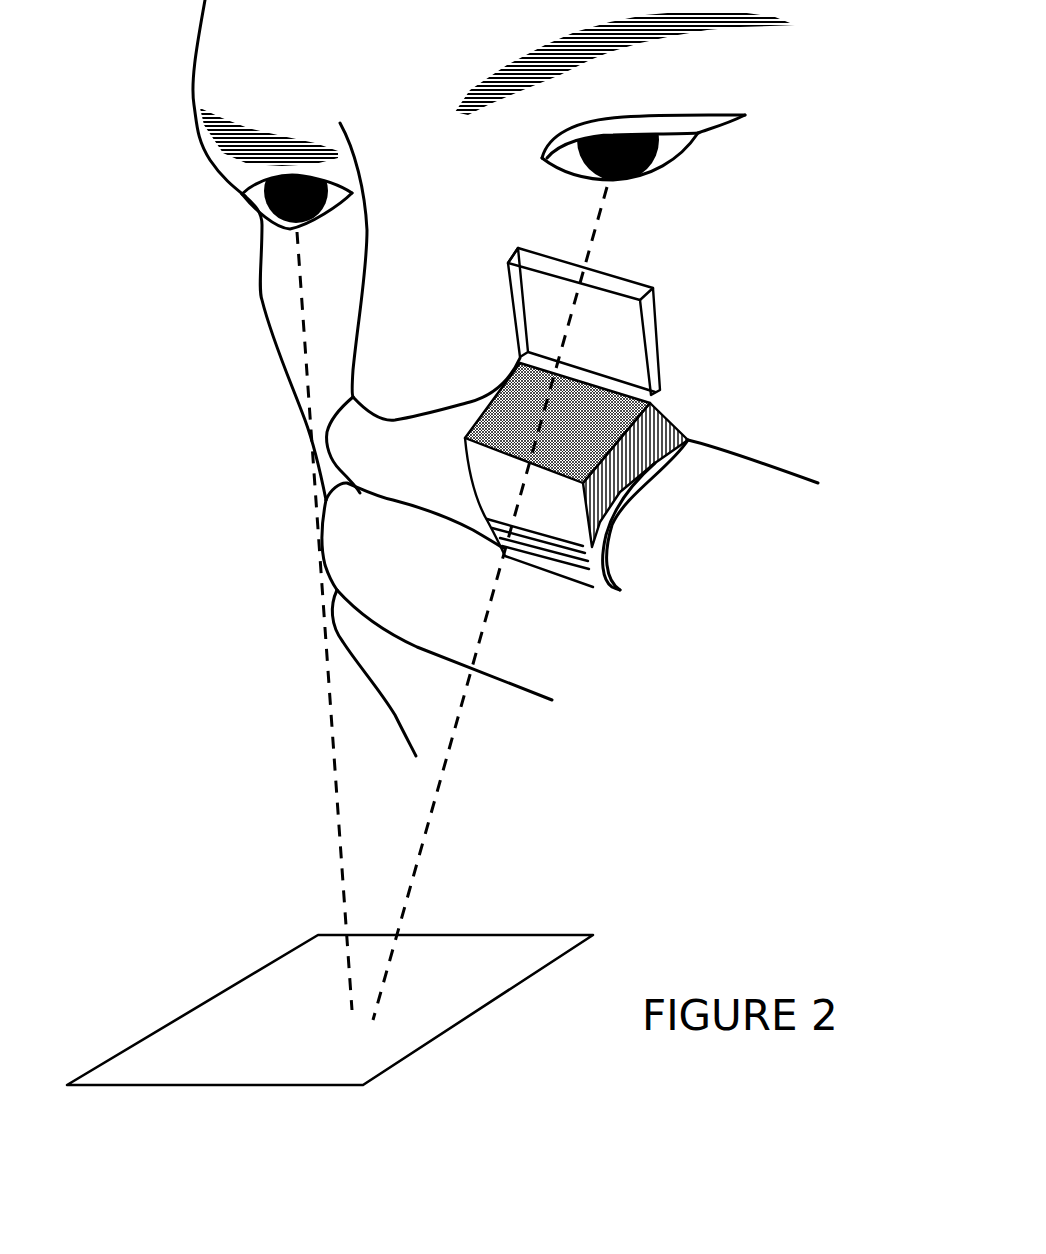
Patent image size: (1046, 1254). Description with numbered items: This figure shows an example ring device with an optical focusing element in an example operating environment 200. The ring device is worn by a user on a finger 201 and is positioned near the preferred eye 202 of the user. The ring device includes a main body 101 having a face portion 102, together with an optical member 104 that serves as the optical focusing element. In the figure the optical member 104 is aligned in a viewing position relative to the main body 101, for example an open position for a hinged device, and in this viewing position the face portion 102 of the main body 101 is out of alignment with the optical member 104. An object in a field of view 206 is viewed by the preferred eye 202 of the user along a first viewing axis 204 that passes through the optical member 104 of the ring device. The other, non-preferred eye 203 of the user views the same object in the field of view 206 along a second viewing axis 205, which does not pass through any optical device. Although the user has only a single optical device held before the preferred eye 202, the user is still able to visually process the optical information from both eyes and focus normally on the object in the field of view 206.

The main body 101 is at (668, 433).
The face portion 102 is at (573, 447).
The optical member 104 is at (600, 342).
The operating environment 200 is at (228, 498).
The finger 201 is at (580, 612).
The preferred eye 202 is at (672, 183).
The non-preferred eye 203 is at (218, 255).
The first viewing axis 204 is at (418, 867).
The second viewing axis 205 is at (342, 878).
The field of view 206 is at (340, 1007).